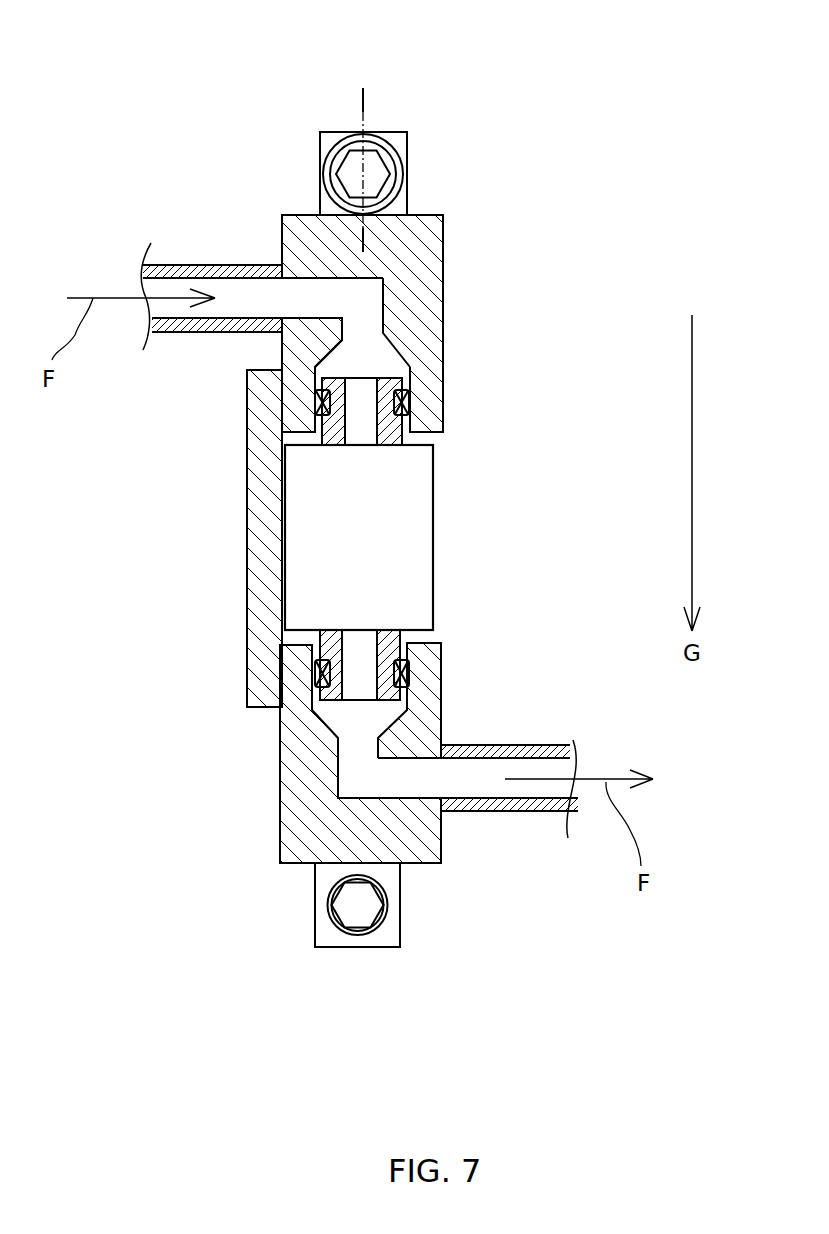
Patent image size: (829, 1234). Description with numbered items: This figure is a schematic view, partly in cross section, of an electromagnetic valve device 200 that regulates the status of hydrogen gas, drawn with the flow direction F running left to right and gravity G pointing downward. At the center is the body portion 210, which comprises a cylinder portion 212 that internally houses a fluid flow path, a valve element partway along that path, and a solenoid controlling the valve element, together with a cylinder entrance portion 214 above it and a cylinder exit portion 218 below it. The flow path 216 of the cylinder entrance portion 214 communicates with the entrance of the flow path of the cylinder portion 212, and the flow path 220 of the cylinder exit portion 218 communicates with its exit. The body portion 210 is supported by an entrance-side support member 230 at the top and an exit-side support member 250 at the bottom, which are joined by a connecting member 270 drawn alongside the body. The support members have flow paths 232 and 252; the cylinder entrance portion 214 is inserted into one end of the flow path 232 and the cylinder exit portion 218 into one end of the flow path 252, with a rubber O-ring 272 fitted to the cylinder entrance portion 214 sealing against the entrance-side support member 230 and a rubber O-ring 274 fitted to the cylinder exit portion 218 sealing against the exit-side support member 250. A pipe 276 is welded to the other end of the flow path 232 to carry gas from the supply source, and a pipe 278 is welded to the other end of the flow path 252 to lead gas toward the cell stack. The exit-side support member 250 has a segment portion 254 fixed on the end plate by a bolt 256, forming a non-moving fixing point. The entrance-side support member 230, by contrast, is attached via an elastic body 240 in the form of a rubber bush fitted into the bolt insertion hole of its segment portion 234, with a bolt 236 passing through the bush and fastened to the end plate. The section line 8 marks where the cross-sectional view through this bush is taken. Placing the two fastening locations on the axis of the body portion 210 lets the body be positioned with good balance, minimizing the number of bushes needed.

The line 8- 8 is at (386, 108).
The electromagnetic valve device 200 is at (630, 166).
The body portion 210 is at (470, 505).
The cylinder portion 212 is at (413, 536).
The cylinder entrance portion 214 is at (400, 440).
The flow path 216 is at (360, 405).
The cylinder exit portion 218 is at (400, 637).
The flow path 220 is at (405, 720).
The entrance-side support member 230 is at (363, 291).
The flow path 232 is at (367, 304).
The segment portion 234 is at (332, 138).
The bolt 236 is at (375, 172).
The elastic body 240 is at (375, 110).
The exit-side support member 250 is at (371, 846).
The flow path 252 is at (363, 781).
The segment portion 254 is at (393, 956).
The bolt 256 is at (372, 912).
The connecting member 270 is at (262, 556).
The O-ring 272 is at (406, 410).
The O-ring 274 is at (406, 683).
The pipe 276 is at (205, 325).
The pipe 278 is at (514, 805).